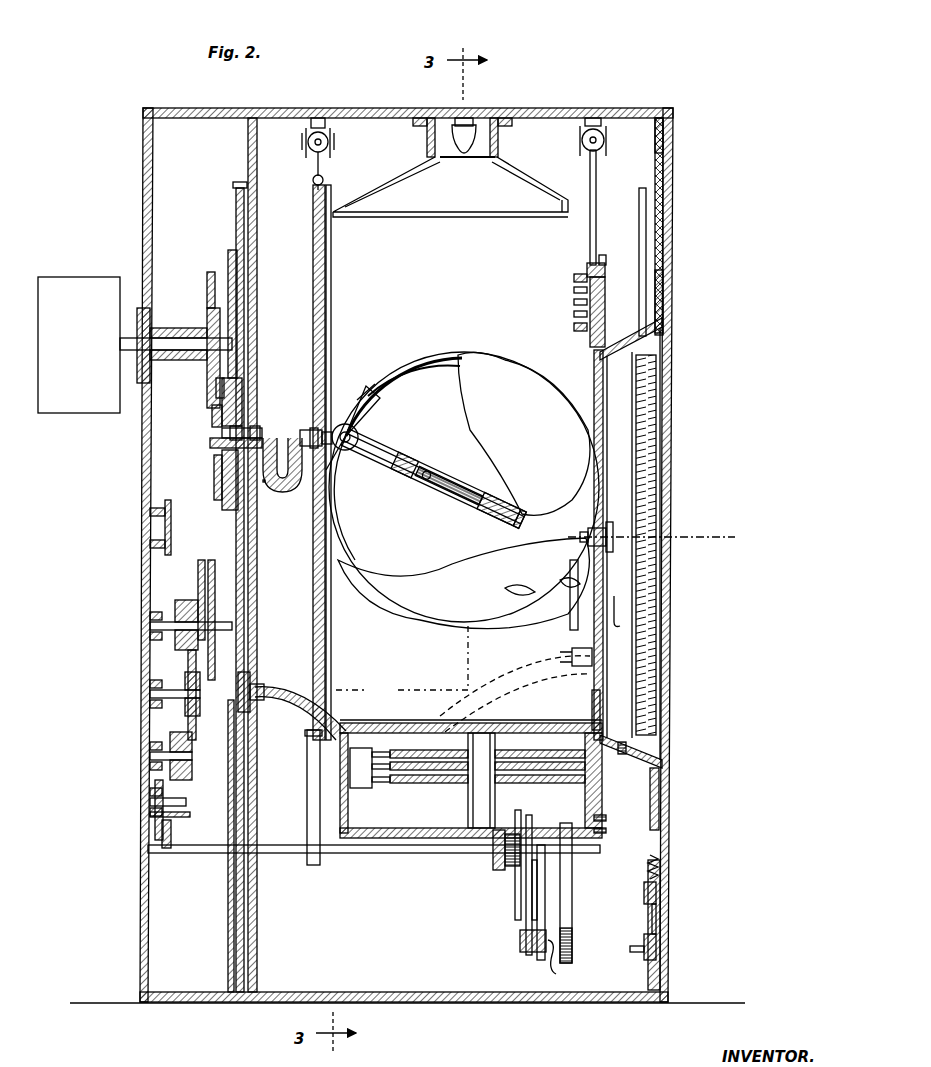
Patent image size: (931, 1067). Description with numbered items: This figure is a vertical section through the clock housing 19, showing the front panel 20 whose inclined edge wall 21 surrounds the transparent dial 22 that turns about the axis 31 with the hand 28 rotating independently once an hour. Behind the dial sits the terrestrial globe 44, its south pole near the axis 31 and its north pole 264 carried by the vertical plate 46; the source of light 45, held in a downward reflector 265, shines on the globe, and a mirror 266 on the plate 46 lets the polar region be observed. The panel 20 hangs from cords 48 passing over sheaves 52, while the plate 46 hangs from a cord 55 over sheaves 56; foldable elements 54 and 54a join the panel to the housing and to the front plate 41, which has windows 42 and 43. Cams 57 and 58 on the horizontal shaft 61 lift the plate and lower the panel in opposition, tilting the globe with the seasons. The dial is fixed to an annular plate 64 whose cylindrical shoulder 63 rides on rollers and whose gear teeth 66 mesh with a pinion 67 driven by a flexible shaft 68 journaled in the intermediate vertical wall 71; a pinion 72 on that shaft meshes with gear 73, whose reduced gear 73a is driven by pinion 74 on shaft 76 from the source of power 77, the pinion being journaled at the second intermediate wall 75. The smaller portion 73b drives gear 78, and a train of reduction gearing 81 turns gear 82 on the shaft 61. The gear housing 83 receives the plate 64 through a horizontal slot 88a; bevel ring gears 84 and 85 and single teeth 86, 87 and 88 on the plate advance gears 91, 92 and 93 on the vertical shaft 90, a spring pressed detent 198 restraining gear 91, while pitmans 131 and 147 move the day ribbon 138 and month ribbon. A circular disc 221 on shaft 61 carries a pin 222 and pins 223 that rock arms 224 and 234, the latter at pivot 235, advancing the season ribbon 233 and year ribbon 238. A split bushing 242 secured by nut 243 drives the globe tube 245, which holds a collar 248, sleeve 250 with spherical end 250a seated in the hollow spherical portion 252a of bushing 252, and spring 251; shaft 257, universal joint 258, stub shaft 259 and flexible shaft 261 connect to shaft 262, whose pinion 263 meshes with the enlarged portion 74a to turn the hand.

The clock housing 19 is at (143, 244).
The front panel 20 is at (663, 297).
The inclined edge wall 21 is at (640, 335).
The transparent dial 22 is at (607, 464).
The hand 28 is at (622, 604).
The axis 31 is at (712, 537).
The front plate 41 is at (660, 924).
The window 42 is at (658, 888).
The window 43 is at (658, 942).
The terrestrial globe 44 is at (470, 352).
The source of light 45 is at (462, 163).
The vertical plate 46 is at (313, 300).
The cords 48 is at (597, 212).
The sheaves 52 is at (604, 148).
The foldable element 54 is at (663, 206).
The foldable element 54a is at (660, 862).
The cord 55 is at (313, 178).
The sheaves 56 is at (306, 145).
The cam 57 is at (307, 804).
The cam 58 is at (572, 906).
The horizontal shaft 61 is at (364, 854).
The cylindrical shoulder 63 is at (590, 264).
The annular plate 64 is at (606, 300).
The gear teeth 66 is at (602, 256).
The pinion 67 is at (590, 652).
The flexible shaft 68 is at (512, 668).
The intermediate vertical wall 71 is at (257, 648).
The pinion 72 is at (252, 712).
The gear 73 is at (244, 580).
The reduced gear 73a is at (236, 386).
The gear portion 73b is at (216, 396).
The pinion 74 is at (216, 378).
The enlarged portion 74a is at (212, 414).
The second intermediate wall 75 is at (237, 172).
The shaft 76 is at (178, 338).
The source of power 77 is at (79, 345).
The gear 78 is at (220, 470).
The train of reduction gearing 81 is at (180, 668).
The gear 82 is at (172, 860).
The gear housing 83 is at (340, 767).
The bevel ring gear 84 is at (574, 327).
The bevel ring gear 85 is at (574, 278).
The beveled tooth 86 is at (574, 314).
The beveled tooth 87 is at (574, 302).
The beveled tooth 88 is at (574, 290).
The horizontal slot 88a is at (594, 718).
The vertical shaft 90 is at (486, 728).
The gear 91 is at (408, 750).
The gear 92 is at (428, 770).
The gear 93 is at (406, 783).
The pitman 131 is at (606, 816).
The ribbon 138 is at (622, 754).
The pitman 147 is at (606, 830).
The spring pressed detent 198 is at (380, 752).
The circular disc 221 is at (526, 860).
The pin 222 is at (545, 868).
The pins 223 is at (516, 850).
The rocker arm 224 is at (520, 930).
The ribbon 233 is at (658, 900).
The rocker arm 234 is at (540, 918).
The pivot 235 is at (563, 963).
The ribbon 238 is at (644, 948).
The split bushing 242 is at (588, 570).
The nut 243 is at (612, 536).
The tube 245 is at (432, 462).
The collar 248 is at (492, 495).
The sleeve 250 is at (362, 432).
The spherical end 250a is at (368, 404).
The spring 251 is at (452, 478).
The split bushing 252 is at (310, 432).
The hollow spherical portion 252a is at (338, 420).
The shaft 257 is at (420, 490).
The universal joint 258 is at (354, 450).
The stub shaft 259 is at (340, 452).
The flexible shaft 261 is at (280, 494).
The shaft 262 is at (246, 428).
The pinion 263 is at (212, 436).
The north pole 264 is at (378, 394).
The reflector 265 is at (546, 184).
The mirror 266 is at (331, 284).